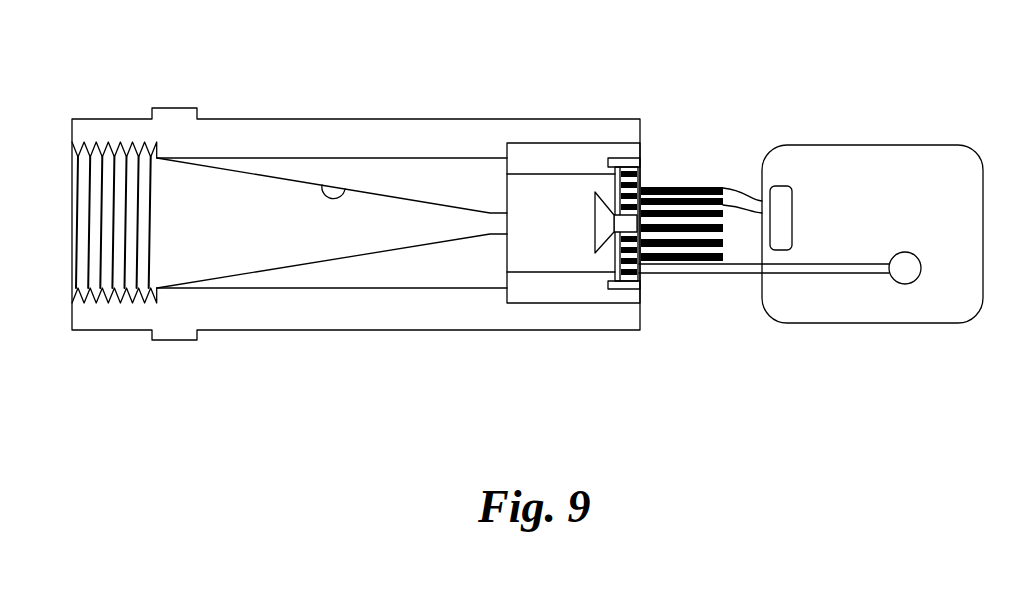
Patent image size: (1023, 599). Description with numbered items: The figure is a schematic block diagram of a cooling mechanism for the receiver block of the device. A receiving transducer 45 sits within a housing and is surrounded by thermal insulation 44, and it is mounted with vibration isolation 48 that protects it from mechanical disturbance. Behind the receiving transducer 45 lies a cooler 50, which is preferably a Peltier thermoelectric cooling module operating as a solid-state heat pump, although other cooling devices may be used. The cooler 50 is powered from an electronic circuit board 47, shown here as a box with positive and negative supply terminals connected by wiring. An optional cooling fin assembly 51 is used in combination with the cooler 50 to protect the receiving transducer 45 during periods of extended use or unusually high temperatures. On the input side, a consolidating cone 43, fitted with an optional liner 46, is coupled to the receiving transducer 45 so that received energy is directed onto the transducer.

The consolidating cone 43 is at (283, 172).
The thermal insulation 44 is at (541, 160).
The receiving transducer 45 is at (598, 220).
The liner 46 is at (347, 190).
The electronic circuit board 47 is at (893, 172).
The vibration isolation 48 is at (619, 284).
The cooler 50 is at (637, 277).
The cooling fin assembly 51 is at (689, 188).